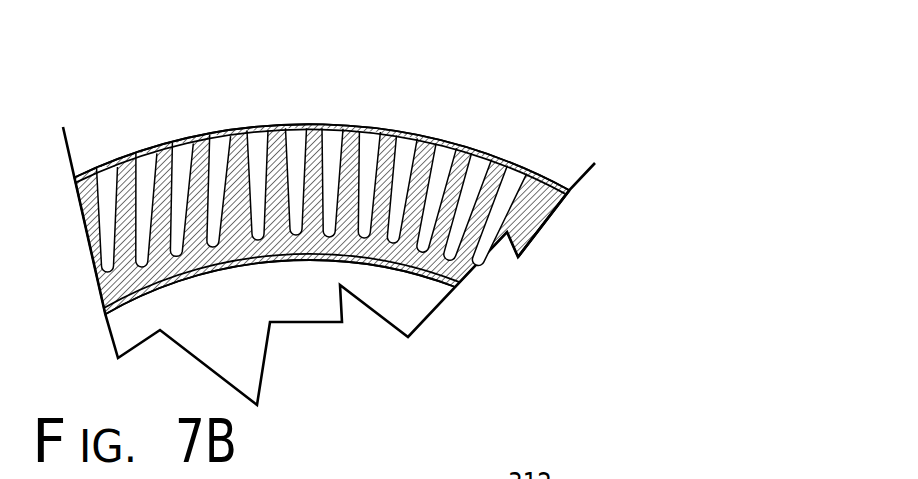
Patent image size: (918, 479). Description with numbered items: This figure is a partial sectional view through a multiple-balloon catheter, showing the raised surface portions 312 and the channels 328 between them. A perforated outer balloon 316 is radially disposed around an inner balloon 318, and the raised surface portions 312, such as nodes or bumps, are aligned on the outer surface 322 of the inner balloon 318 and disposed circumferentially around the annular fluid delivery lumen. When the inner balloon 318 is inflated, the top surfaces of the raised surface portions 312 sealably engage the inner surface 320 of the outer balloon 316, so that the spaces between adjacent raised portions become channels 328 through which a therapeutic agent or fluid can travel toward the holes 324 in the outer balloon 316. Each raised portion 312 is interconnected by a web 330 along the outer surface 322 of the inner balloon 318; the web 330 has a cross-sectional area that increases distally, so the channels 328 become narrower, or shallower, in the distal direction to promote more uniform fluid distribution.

The raised surface portions 312 is at (407, 130).
The outer balloon 316 is at (560, 187).
The inner balloon 318 is at (413, 280).
The inner surface of the outer balloon 320 is at (573, 193).
The outer surface of the inner balloon 322 is at (470, 283).
The holes 324 is at (523, 183).
The channels 328 is at (222, 167).
The web 330 is at (332, 222).